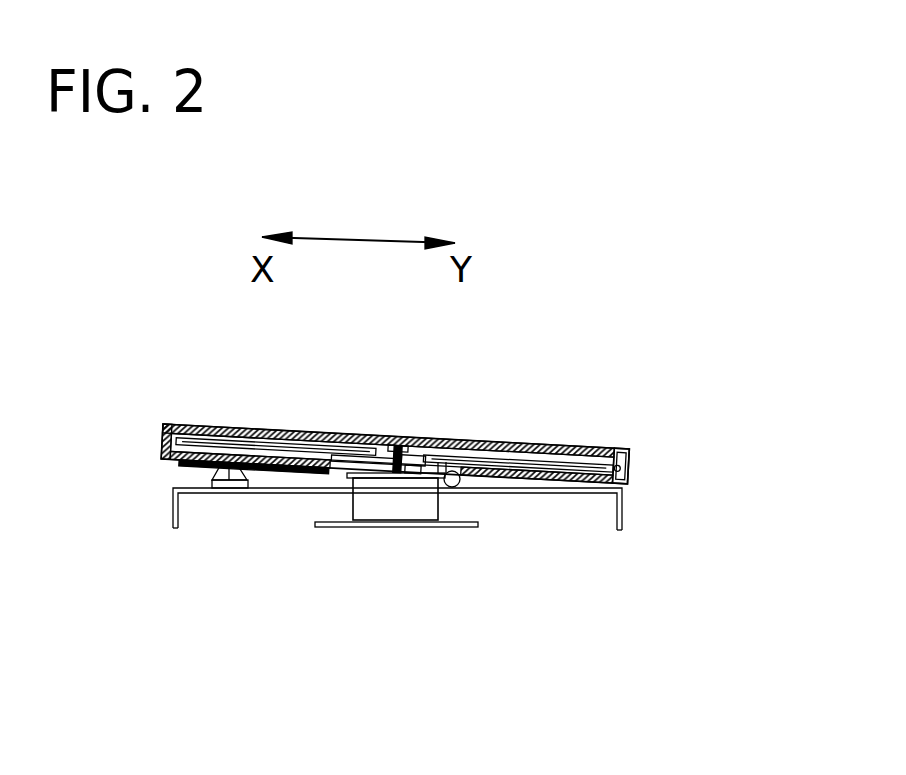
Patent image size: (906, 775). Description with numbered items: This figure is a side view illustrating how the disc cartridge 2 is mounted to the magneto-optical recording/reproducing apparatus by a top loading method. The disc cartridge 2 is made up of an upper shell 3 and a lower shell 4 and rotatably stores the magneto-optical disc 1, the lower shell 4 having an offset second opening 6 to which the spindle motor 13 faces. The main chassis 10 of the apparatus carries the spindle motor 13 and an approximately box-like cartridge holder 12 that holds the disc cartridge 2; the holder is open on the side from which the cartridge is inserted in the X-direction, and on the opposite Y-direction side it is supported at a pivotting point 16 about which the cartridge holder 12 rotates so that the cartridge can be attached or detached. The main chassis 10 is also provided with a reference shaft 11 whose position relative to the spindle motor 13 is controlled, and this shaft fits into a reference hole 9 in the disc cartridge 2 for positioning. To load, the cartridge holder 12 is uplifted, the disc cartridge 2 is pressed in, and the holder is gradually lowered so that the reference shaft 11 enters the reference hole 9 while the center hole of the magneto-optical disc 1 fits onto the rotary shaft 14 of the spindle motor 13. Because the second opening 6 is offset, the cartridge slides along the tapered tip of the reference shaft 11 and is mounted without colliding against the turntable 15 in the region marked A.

The magneto-optical disc 1 is at (508, 440).
The disc cartridge 2 is at (163, 440).
The upper shell 3 is at (168, 424).
The lower shell 4 is at (195, 462).
The second opening 6 is at (335, 470).
The reference hole 9 is at (220, 467).
The main chassis 10 is at (627, 517).
The reference shaft 11 is at (232, 482).
The cartridge holder 12 is at (632, 455).
The spindle motor 13 is at (373, 500).
The rotary shaft 14 is at (392, 437).
The turntable 15 is at (413, 437).
The pivotting point 16 is at (632, 475).
The part A is at (470, 490).